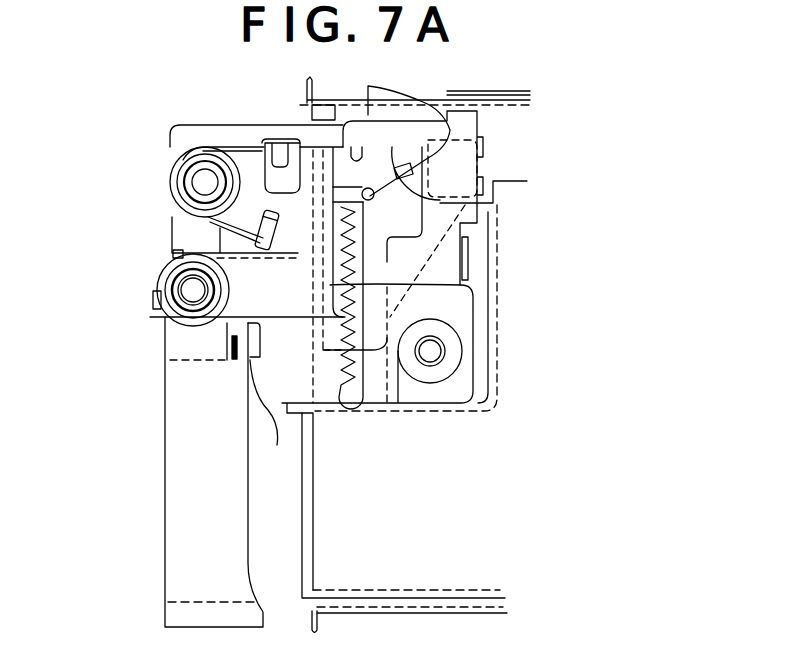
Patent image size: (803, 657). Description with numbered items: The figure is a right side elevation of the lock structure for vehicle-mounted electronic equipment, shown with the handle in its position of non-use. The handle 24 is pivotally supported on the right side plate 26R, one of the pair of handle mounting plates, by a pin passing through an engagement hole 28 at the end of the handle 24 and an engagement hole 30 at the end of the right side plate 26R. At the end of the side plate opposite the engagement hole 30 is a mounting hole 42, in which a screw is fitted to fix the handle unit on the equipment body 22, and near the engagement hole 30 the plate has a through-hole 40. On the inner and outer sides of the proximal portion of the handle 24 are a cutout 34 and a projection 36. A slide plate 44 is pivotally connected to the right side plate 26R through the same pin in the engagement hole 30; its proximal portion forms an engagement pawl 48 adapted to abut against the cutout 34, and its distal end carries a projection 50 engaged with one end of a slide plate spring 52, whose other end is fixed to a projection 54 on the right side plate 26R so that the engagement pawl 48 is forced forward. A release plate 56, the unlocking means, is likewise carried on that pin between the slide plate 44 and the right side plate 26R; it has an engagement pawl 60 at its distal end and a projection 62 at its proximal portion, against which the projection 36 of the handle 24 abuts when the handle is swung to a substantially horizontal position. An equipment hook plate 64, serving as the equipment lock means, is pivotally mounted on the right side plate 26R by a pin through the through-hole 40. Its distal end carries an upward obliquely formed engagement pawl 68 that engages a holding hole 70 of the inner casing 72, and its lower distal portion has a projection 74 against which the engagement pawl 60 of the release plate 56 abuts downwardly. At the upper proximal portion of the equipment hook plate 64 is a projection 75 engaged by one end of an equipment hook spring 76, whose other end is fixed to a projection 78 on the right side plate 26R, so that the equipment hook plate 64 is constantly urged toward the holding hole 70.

The body 22 is at (302, 560).
The handle 24 is at (165, 455).
The right side plate 26R is at (437, 405).
The engagement hole 28 is at (188, 297).
The engagement hole 30 is at (193, 254).
The cutout 34 is at (232, 348).
The projection 36 is at (153, 300).
The through-hole 40 is at (170, 195).
The mounting hole 42 is at (450, 375).
The slide plate 44 is at (265, 398).
The engagement pawl 48 is at (227, 363).
The projection 50 is at (467, 260).
The slide plate spring 52 is at (369, 410).
The projection 54 is at (337, 143).
The release plate 56 is at (372, 198).
The engagement pawl 60 is at (493, 203).
The projection 62 is at (173, 253).
The equipment hook plate 64 is at (296, 172).
The engagement pawl 68 is at (373, 90).
The holding hole 70 is at (450, 93).
The inner casing 72 is at (318, 620).
The projection 74 is at (417, 166).
The projection 75 is at (272, 142).
The equipment hook spring 76 is at (170, 181).
The projection 78 is at (192, 152).